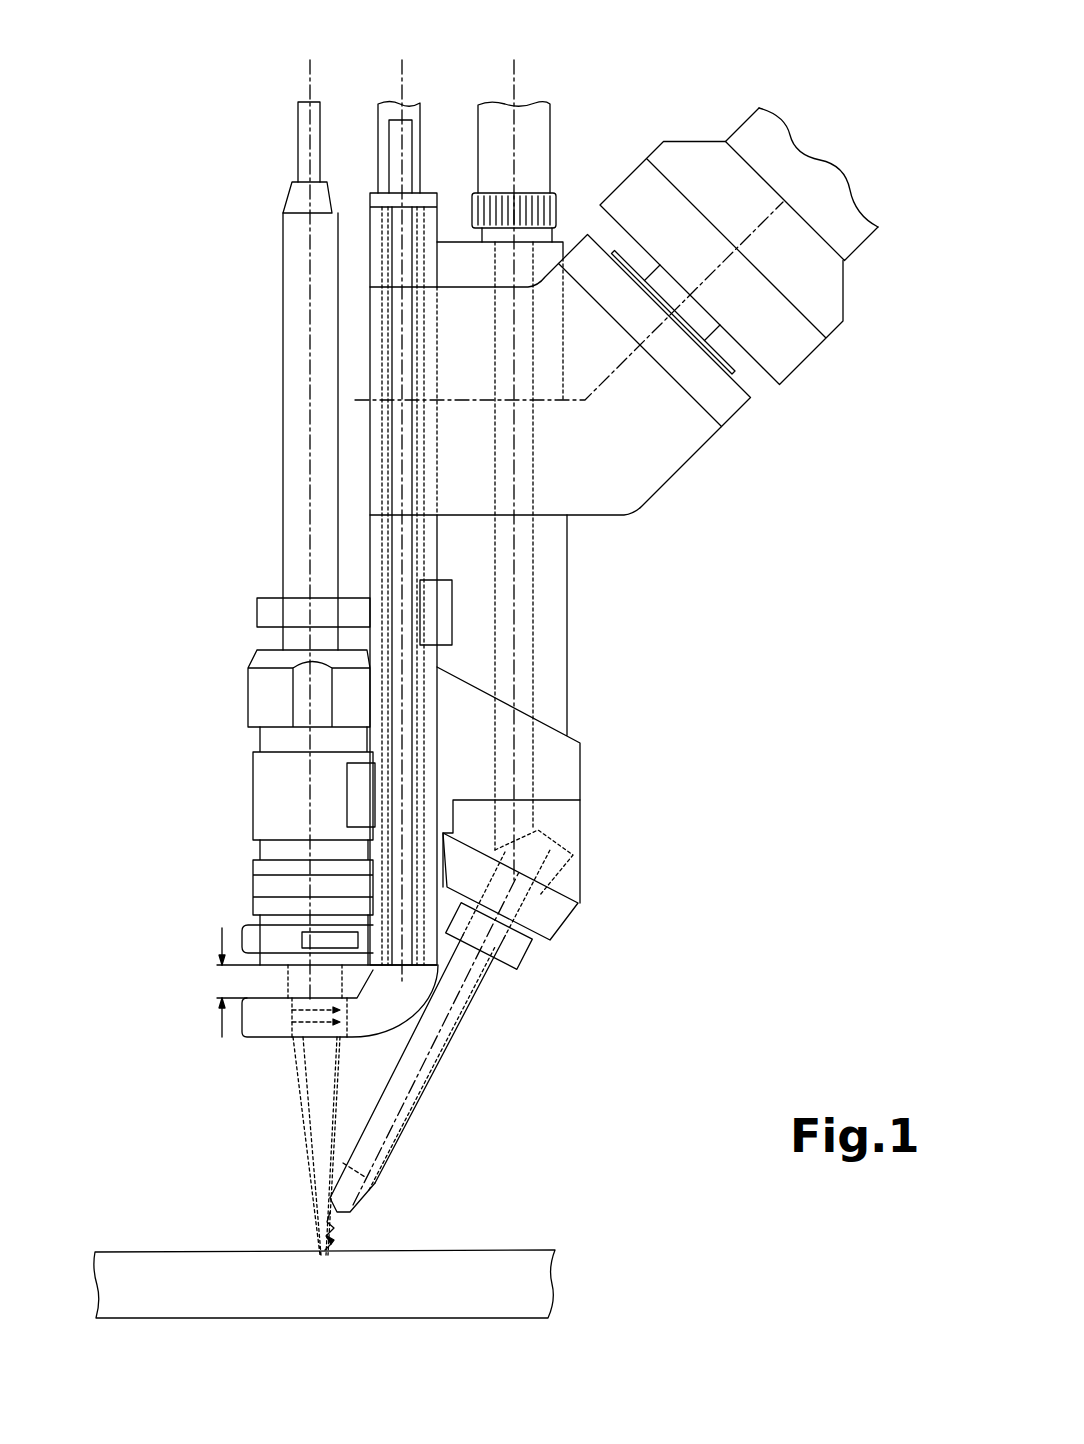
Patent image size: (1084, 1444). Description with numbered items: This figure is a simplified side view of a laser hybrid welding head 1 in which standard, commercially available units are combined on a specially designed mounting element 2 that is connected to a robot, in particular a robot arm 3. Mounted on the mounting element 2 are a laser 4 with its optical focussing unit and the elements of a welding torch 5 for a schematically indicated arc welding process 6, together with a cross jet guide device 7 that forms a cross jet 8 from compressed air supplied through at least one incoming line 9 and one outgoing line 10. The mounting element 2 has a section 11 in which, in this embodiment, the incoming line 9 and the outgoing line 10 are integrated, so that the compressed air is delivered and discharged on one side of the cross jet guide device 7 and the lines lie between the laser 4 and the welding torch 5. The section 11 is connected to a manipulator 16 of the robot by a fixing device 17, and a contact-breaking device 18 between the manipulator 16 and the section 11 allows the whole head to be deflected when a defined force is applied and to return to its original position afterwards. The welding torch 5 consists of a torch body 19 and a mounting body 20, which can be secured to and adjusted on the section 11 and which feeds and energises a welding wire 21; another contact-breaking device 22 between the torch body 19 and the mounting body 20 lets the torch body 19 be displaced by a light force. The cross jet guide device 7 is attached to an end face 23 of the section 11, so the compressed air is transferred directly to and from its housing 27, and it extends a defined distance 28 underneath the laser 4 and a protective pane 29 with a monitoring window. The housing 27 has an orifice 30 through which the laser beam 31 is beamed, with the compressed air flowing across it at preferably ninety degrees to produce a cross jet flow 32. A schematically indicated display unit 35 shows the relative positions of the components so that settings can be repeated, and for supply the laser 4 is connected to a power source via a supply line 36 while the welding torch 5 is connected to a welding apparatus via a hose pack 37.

The laser hybrid welding head 1 is at (142, 112).
The mounting element 2 is at (315, 486).
The robot arm 3 is at (793, 163).
The laser 4 is at (263, 776).
The welding torch 5 is at (567, 724).
The arc welding process 6 is at (377, 1230).
The cross jet guide device 7 is at (262, 1110).
The cross jet 8 is at (300, 1043).
The incoming line 9 is at (408, 140).
The outgoing line 10 is at (406, 102).
The section 11 is at (372, 543).
The manipulator 16 is at (822, 283).
The fixing device 17 is at (653, 452).
The contact-breaking device 18 is at (786, 398).
The torch body 19 is at (440, 1005).
The mounting body 20 is at (557, 627).
The welding wire 21 is at (322, 1210).
The contact-breaking device 22 is at (562, 954).
The end face 23 is at (420, 967).
The housing 27 is at (216, 1058).
The distance 28 is at (222, 978).
The protective pane 29 is at (272, 915).
The orifice 30 is at (350, 1040).
The laser beam 31 is at (313, 1136).
The cross jet flow 32 is at (277, 1044).
The display unit 35 is at (360, 803).
The supply line 36 is at (298, 152).
The hose pack 37 is at (542, 132).